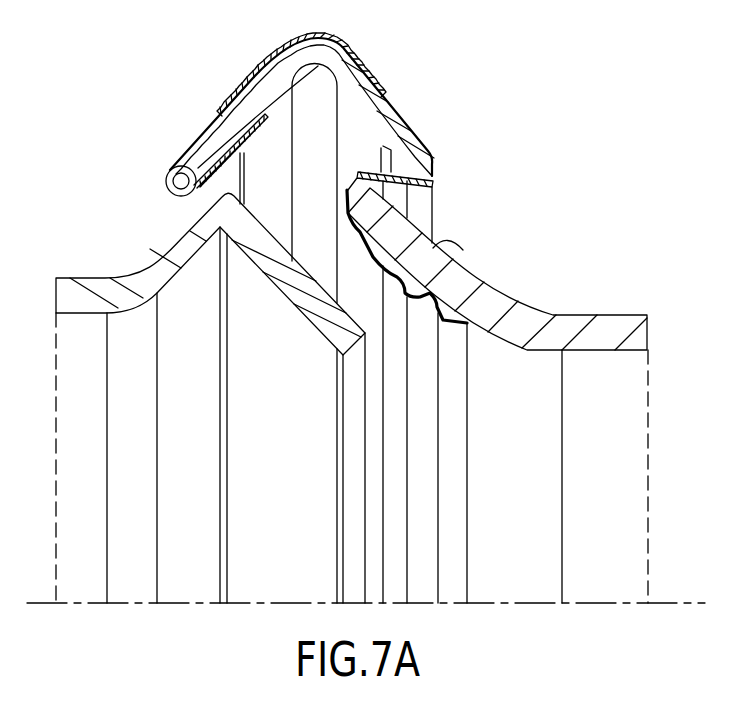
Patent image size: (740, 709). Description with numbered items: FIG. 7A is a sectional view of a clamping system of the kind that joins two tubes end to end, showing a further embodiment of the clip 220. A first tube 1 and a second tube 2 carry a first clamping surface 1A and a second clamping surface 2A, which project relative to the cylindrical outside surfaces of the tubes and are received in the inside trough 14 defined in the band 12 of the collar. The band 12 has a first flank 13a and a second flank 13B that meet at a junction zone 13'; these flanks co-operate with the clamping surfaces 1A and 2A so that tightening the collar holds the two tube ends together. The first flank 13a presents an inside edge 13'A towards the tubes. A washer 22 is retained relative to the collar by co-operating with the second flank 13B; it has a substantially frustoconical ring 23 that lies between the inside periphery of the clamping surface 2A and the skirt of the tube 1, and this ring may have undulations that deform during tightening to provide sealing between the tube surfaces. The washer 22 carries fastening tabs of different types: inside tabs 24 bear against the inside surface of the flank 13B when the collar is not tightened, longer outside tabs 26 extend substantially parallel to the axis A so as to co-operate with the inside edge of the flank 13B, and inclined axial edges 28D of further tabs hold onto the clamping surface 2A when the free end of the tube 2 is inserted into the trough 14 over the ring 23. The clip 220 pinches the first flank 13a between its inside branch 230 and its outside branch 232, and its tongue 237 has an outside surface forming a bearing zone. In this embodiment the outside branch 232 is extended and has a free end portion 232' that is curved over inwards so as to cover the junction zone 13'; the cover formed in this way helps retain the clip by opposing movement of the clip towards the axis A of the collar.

The first tube 1 is at (70, 270).
The first clamping surface 1A is at (187, 246).
The second tube 2 is at (582, 298).
The second clamping surface 2A is at (445, 265).
The band 12 is at (298, 35).
The junction zone 13' is at (318, 22).
The first flank 13a is at (227, 138).
The second flank 13B is at (381, 95).
The folded end of seal 13'A is at (130, 194).
The inside trough 14 is at (318, 82).
The washer 22 is at (337, 193).
The frustoconical ring 23 is at (396, 272).
The inside tabs 24 is at (381, 167).
The outside tabs of a first type 26 is at (450, 254).
The inclined axial edges 28D is at (403, 188).
The clip 220 is at (213, 82).
The inside branch 230 is at (241, 174).
The outside branch 232 is at (300, 74).
The free end portion 232' is at (371, 59).
The tongue 237 is at (188, 167).
The axis A is at (682, 603).